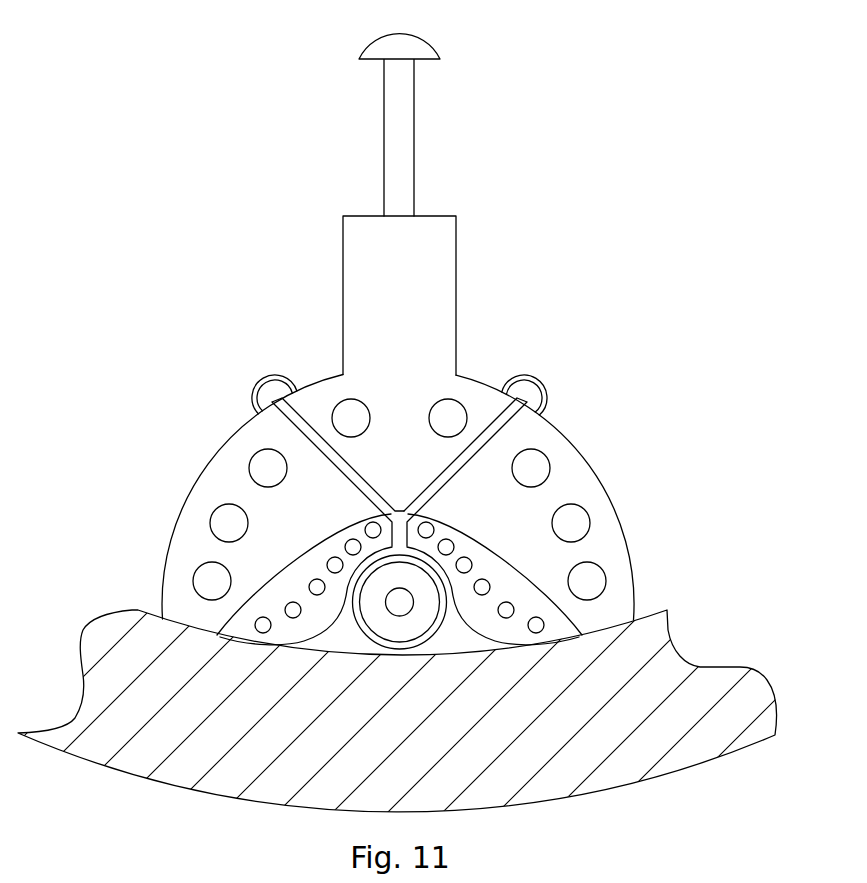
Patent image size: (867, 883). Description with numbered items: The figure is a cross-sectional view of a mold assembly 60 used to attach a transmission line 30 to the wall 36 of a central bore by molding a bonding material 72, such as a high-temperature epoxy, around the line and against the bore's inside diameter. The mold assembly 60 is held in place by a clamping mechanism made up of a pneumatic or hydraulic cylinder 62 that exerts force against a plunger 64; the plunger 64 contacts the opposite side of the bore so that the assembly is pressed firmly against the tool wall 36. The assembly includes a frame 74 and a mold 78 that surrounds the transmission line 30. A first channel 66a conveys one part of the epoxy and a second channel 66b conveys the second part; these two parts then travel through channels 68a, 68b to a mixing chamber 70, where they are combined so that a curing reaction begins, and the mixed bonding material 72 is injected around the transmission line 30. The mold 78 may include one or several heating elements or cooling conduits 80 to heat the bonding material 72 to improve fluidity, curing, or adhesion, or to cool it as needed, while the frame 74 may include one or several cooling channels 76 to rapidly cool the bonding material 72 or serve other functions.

The mold assembly 60 is at (172, 200).
The plunger 64 is at (400, 107).
The pneumatic or hydraulic cylinder 62 is at (432, 250).
The first channel 66a is at (275, 390).
The second channel 66b is at (524, 390).
The channel 68a is at (283, 410).
The channel 68b is at (520, 410).
The frame 74 is at (232, 473).
The mixing chamber 70 is at (393, 520).
The transmission line 30 is at (421, 588).
The cooling channels 76 is at (587, 578).
The mold 78 is at (290, 587).
The bonding material 72 is at (323, 633).
The heating elements or cooling conduits 80 is at (533, 623).
The wall 36 is at (232, 777).